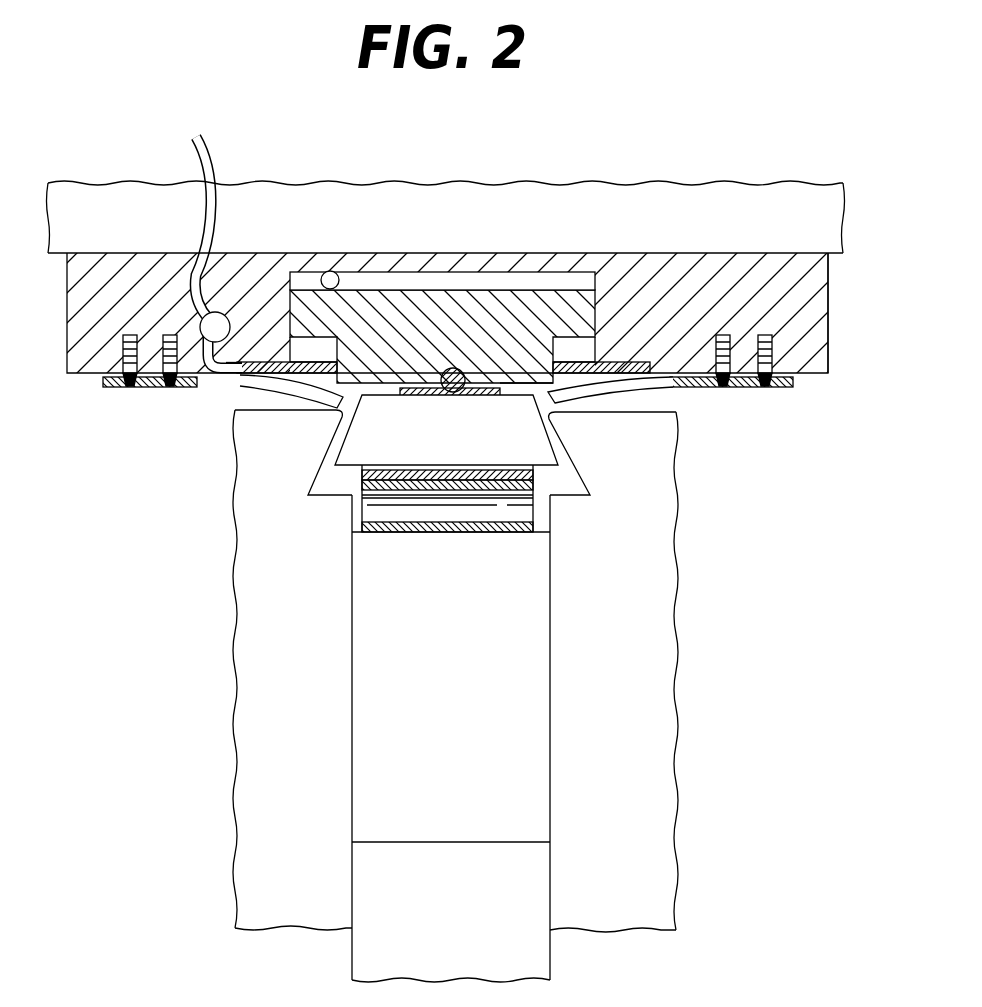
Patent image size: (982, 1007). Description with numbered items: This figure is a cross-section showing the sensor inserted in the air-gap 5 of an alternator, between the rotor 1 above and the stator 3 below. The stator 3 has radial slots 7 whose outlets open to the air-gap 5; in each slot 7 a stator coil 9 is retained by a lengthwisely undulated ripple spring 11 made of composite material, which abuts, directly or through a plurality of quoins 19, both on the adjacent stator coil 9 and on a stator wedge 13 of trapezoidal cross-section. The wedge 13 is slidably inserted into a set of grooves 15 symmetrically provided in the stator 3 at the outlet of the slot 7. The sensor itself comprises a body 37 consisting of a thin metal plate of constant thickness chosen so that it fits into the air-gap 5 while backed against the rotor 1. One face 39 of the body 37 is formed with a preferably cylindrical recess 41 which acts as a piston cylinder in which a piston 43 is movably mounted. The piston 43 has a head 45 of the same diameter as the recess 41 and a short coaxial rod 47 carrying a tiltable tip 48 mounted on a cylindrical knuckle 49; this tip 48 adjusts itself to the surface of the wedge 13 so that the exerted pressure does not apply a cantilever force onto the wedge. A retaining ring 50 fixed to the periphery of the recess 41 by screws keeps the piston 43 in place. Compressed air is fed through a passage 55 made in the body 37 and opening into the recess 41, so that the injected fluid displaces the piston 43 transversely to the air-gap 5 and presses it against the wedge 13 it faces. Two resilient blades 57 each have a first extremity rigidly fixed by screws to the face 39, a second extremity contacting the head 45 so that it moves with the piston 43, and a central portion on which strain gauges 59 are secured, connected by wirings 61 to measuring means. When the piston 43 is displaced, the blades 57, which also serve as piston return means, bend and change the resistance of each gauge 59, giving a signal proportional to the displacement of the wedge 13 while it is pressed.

The rotor 1 is at (266, 233).
The stator 3 is at (627, 681).
The air-gap 5 is at (846, 293).
The radial slot 7 is at (352, 810).
The stator coil 9 is at (528, 868).
The ripple spring 11 is at (520, 512).
The stator wedge 13 is at (558, 435).
The groove 15 is at (307, 495).
The quoin 19 is at (520, 540).
The body 37 is at (824, 356).
The face 39 is at (818, 382).
The recess 41 is at (593, 350).
The piston 43 is at (397, 292).
The head 45 is at (577, 307).
The rod 47 is at (523, 387).
The tiltable tip 48 is at (470, 384).
The cylindrical knuckle 49 is at (445, 397).
The retaining ring 50 is at (638, 367).
The passage 55 is at (330, 271).
The resilient blade 57 is at (330, 387).
The strain gauge 59 is at (233, 362).
The wiring 61 is at (202, 244).